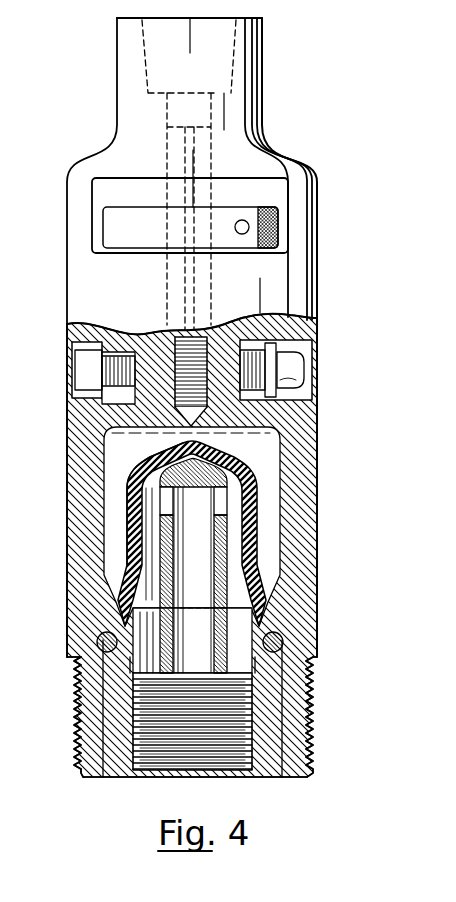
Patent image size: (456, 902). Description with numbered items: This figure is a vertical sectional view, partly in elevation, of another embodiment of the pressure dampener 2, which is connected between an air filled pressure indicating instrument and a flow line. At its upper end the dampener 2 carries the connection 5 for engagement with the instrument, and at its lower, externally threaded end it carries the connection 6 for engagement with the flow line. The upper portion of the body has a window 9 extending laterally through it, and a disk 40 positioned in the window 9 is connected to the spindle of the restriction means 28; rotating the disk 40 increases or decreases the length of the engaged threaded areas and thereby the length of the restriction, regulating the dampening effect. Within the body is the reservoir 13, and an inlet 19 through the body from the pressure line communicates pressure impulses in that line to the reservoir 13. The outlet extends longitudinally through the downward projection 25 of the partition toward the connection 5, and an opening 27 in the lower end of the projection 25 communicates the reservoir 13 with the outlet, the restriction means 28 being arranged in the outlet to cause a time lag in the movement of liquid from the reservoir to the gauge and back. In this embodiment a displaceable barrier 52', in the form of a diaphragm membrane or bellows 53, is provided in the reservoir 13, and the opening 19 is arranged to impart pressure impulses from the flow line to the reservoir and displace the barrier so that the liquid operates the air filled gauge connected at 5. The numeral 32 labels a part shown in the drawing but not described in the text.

The dampener 2 is at (286, 161).
The connection 5 is at (253, 47).
The connection 6 is at (310, 714).
The window 9 is at (190, 215).
The reservoir 13 is at (264, 553).
The inlet 19 is at (247, 745).
The downward projection 25 is at (147, 407).
The opening 27 is at (192, 433).
The restriction means 28 is at (247, 401).
The indicator pin 32 is at (202, 211).
The disk 40 is at (276, 212).
The displaceable barrier 52' is at (100, 509).
The diaphragm membrane or bellows 53 is at (257, 509).